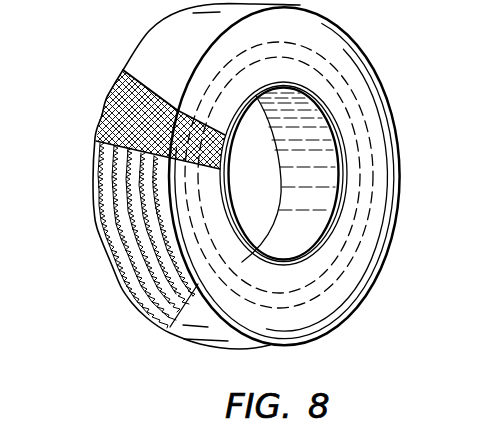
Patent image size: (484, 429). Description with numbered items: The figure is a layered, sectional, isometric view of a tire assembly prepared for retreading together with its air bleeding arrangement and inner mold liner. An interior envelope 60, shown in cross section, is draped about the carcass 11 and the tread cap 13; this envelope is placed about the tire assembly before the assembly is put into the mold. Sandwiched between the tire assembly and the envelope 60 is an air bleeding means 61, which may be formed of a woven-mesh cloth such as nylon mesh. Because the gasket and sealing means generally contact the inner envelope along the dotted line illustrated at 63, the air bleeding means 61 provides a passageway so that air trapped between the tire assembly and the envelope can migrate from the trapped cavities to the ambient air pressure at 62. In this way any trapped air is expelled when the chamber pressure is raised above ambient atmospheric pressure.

The envelope 60 is at (358, 72).
The air bleeding means 61 is at (102, 117).
The ambient air pressure location 62 is at (222, 157).
The carcass 11 is at (215, 217).
The tread cap 13 is at (112, 258).
The dotted line of gasket and sealing means contact 63 is at (334, 272).